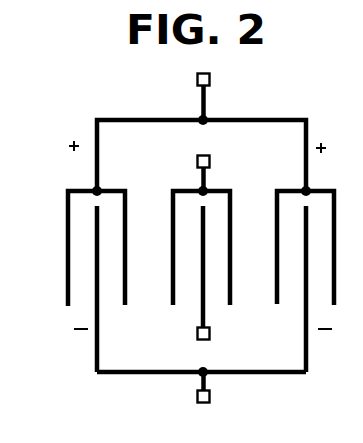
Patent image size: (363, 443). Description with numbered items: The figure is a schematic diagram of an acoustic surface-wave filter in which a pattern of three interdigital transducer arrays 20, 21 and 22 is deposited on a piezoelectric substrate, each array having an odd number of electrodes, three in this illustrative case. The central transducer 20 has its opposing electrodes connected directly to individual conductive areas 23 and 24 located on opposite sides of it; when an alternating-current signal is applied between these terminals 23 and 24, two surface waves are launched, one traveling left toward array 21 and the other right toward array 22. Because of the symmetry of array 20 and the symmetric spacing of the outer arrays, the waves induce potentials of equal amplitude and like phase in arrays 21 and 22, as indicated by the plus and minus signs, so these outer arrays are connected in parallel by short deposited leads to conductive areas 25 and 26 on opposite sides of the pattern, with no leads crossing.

The array 20 is at (165, 173).
The array 21 is at (67, 178).
The array 22 is at (278, 180).
The conductive area 23 is at (196, 147).
The conductive area 24 is at (202, 324).
The conductive area 25 is at (202, 70).
The conductive area 26 is at (202, 386).